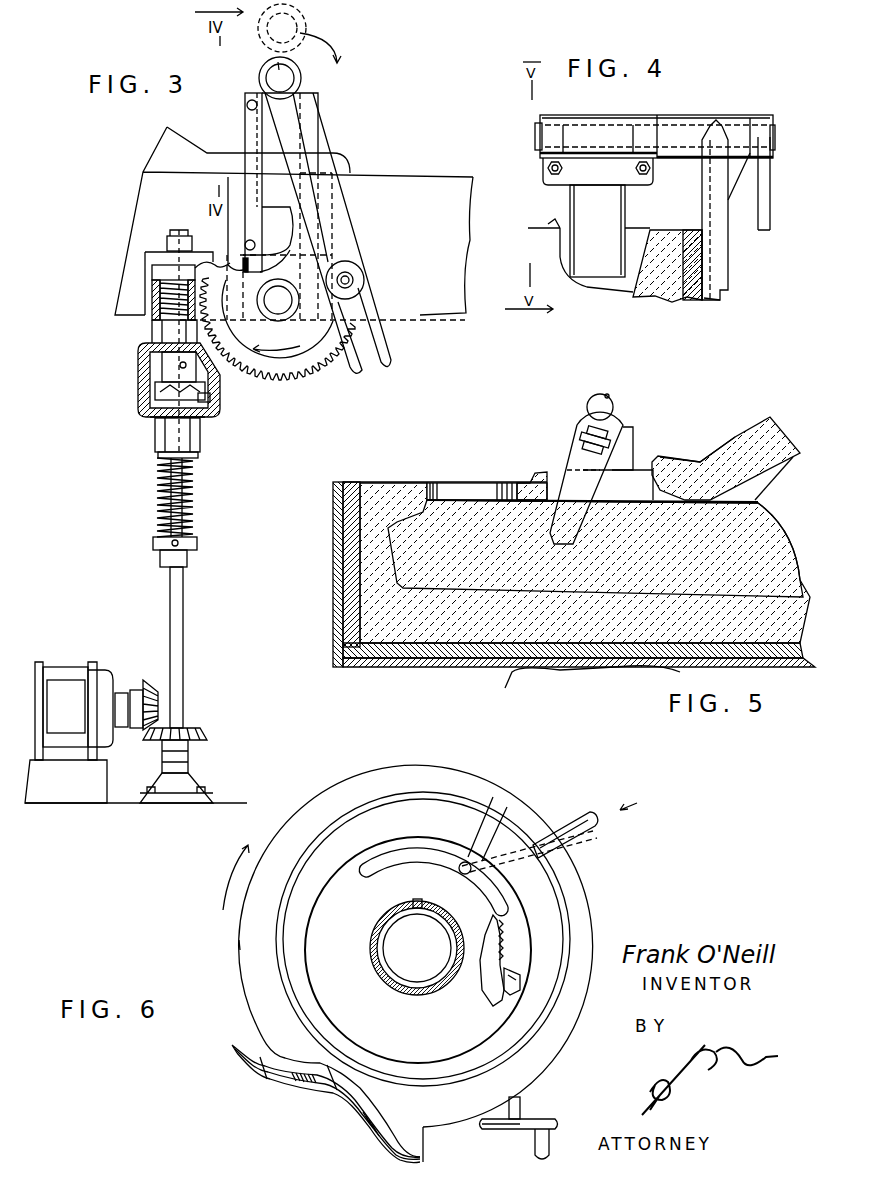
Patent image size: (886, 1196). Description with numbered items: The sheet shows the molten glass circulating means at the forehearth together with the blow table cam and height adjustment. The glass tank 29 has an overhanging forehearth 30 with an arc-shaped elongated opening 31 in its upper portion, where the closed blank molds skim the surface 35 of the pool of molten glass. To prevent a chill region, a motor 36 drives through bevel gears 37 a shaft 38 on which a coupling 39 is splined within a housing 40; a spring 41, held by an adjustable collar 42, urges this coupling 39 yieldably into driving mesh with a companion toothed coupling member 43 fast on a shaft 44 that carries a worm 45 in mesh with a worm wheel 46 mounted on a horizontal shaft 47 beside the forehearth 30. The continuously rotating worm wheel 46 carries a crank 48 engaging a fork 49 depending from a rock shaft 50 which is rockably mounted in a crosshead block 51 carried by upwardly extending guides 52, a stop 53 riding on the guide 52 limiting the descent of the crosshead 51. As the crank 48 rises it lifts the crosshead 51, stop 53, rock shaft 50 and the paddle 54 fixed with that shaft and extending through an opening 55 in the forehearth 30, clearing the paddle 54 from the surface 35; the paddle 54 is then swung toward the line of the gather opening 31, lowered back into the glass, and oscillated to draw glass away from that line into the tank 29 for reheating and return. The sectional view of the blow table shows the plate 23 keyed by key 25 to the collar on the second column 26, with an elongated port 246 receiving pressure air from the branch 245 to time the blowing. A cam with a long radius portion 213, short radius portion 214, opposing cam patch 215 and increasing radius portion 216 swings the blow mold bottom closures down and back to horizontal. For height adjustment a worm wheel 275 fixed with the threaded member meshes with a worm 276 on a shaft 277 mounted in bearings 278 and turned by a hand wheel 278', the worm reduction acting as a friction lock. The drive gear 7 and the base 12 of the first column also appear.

In FIG. 3, the forehearth 30 is at (424, 306).
In FIG. 4, the forehearth 30 is at (688, 229).
In FIG. 5, the forehearth 30 is at (392, 468).
In FIG. 3, the rock shaft 50 is at (289, 80).
In FIG. 4, the rock shaft 50 is at (776, 137).
In FIG. 5, the rock shaft 50 is at (607, 410).
In FIG. 3, the guides 52 is at (322, 109).
In FIG. 4, the guides 52 is at (730, 258).
In FIG. 5, the guides 52 is at (632, 475).
In FIG. 3, the block 51 is at (283, 212).
In FIG. 4, the block 51 is at (720, 292).
In FIG. 3, the crank 48 is at (354, 279).
In FIG. 3, the fork 49 is at (372, 299).
In FIG. 4, the fork 49 is at (772, 178).
In FIG. 3, the horizontal shaft 47 is at (283, 316).
In FIG. 3, the worm wheel 46 is at (333, 378).
In FIG. 5, the worm wheel 46 is at (580, 681).
In FIG. 3, the shaft 44 is at (196, 224).
In FIG. 3, the worm 45 is at (158, 295).
In FIG. 3, the toothed coupling member 43 is at (146, 382).
In FIG. 3, the coupling 39 is at (210, 397).
In FIG. 3, the housing 40 is at (218, 414).
In FIG. 3, the spring 41 is at (197, 465).
In FIG. 3, the adjustable collar 42 is at (198, 543).
In FIG. 3, the driving shaft 38 is at (184, 646).
In FIG. 3, the bevel gears 37 is at (160, 728).
In FIG. 3, the motor 36 is at (110, 652).
In FIG. 4, the stop 53 is at (738, 115).
In FIG. 4, the paddle 54 is at (572, 205).
In FIG. 5, the paddle 54 is at (575, 445).
In FIG. 4, the opening 55 is at (548, 230).
In FIG. 5, the opening 55 is at (716, 443).
In FIG. 5, the elongated opening 31 is at (484, 468).
In FIG. 5, the surface 35 is at (494, 483).
In FIG. 5, the glass tank 29 is at (744, 424).
In FIG. 6, the long radius portion 213 is at (587, 891).
In FIG. 6, the gear 7 is at (239, 943).
In FIG. 6, the worm 276 is at (528, 937).
In FIG. 6, the column 26 is at (383, 917).
In FIG. 6, the key 25 is at (425, 889).
In FIG. 6, the plate 23 is at (378, 843).
In FIG. 6, the elongated port 246 is at (472, 872).
In FIG. 6, the branch 245 is at (580, 820).
In FIG. 6, the worm wheel 275 is at (485, 997).
In FIG. 6, the bearings 278 is at (523, 996).
In FIG. 6, the cam patch 215 is at (232, 1050).
In FIG. 6, the increasing radius portion 216 is at (260, 1058).
In FIG. 6, the short radius portion 214 is at (300, 1077).
In FIG. 6, the base 12 is at (362, 1137).
In FIG. 6, the shaft 277 is at (521, 1104).
In FIG. 6, the hand wheel 278' is at (491, 1139).